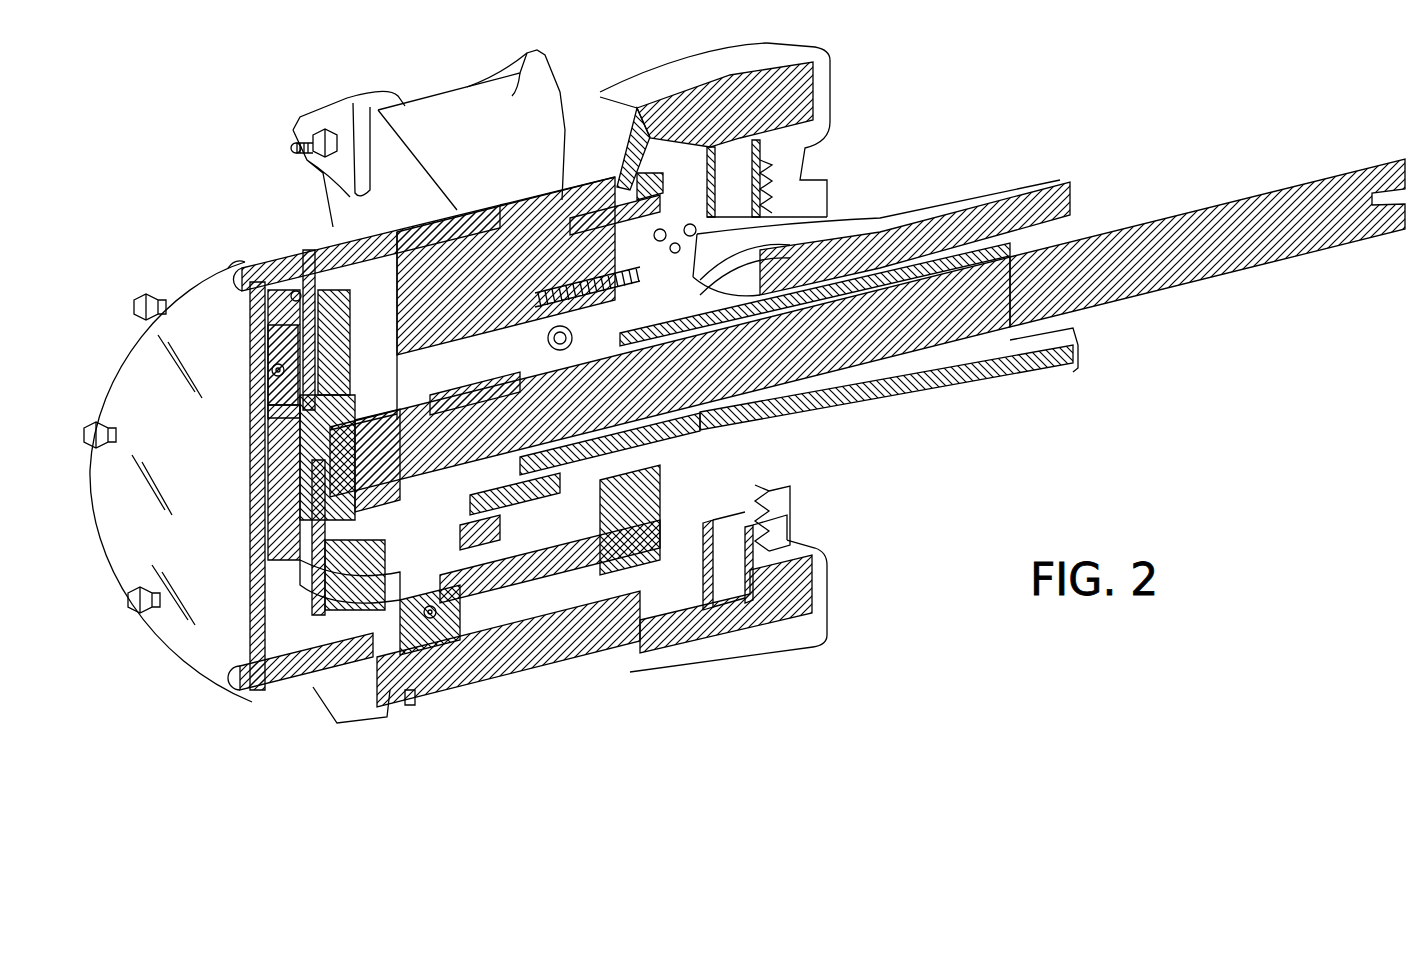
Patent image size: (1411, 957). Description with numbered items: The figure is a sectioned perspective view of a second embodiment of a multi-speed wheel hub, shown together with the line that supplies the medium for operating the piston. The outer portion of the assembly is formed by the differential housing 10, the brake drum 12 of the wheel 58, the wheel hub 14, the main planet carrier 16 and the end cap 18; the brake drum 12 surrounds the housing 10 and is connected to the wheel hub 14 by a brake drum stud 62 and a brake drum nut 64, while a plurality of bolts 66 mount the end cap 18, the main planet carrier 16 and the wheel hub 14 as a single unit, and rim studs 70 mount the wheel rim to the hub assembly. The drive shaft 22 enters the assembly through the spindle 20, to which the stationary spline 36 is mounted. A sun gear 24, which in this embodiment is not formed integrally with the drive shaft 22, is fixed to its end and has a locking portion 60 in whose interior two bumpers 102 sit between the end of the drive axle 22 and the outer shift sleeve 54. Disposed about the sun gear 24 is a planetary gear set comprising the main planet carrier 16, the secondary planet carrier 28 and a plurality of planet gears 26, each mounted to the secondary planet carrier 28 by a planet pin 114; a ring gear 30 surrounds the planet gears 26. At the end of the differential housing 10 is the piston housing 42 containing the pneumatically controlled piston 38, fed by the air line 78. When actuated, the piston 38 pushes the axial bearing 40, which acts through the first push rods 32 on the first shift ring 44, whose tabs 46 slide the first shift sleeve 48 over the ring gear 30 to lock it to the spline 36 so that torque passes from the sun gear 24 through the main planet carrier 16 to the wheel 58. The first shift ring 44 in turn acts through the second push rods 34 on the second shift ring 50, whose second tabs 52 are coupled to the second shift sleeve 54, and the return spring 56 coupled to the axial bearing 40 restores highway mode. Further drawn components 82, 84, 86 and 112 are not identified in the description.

The differential housing 10 is at (900, 425).
The brake drum 12 is at (790, 70).
The wheel hub 14 is at (580, 683).
The main planet carrier 16 is at (312, 245).
The end cap 18 is at (188, 645).
The spindle 20 is at (1010, 385).
The drive shaft 22 is at (1210, 290).
The sun gear 24 is at (389, 460).
The planet gears 26 is at (395, 650).
The secondary planet carrier 28 is at (539, 365).
The ring gear 30 is at (400, 640).
The first push rods 32 is at (650, 560).
The second push rods 34 is at (460, 230).
The stationary spline 36 is at (501, 376).
The piston 38 is at (655, 230).
The axial bearing 40 is at (650, 205).
The piston housing 42 is at (785, 488).
The first shift ring 44 is at (500, 580).
The tabs 46 is at (480, 625).
The first shift sleeve 48 is at (500, 532).
The second shift ring 50 is at (300, 602).
The second tabs 52 is at (268, 342).
The second shift sleeve 54 is at (268, 414).
The return spring 56 is at (506, 266).
The wheel 58 is at (520, 90).
The locking portion 60 is at (300, 505).
The brake drum stud 62 is at (590, 175).
The brake drum nut 64 is at (630, 138).
The bolts 66 is at (143, 305).
The rim studs 70 is at (290, 148).
The air line 78 is at (830, 218).
The screw 82 is at (270, 374).
The ring 84 is at (600, 470).
The spacer 86 is at (596, 520).
The bumpers 102 is at (268, 462).
The flange 112 is at (165, 285).
The planet pins 114 is at (425, 650).